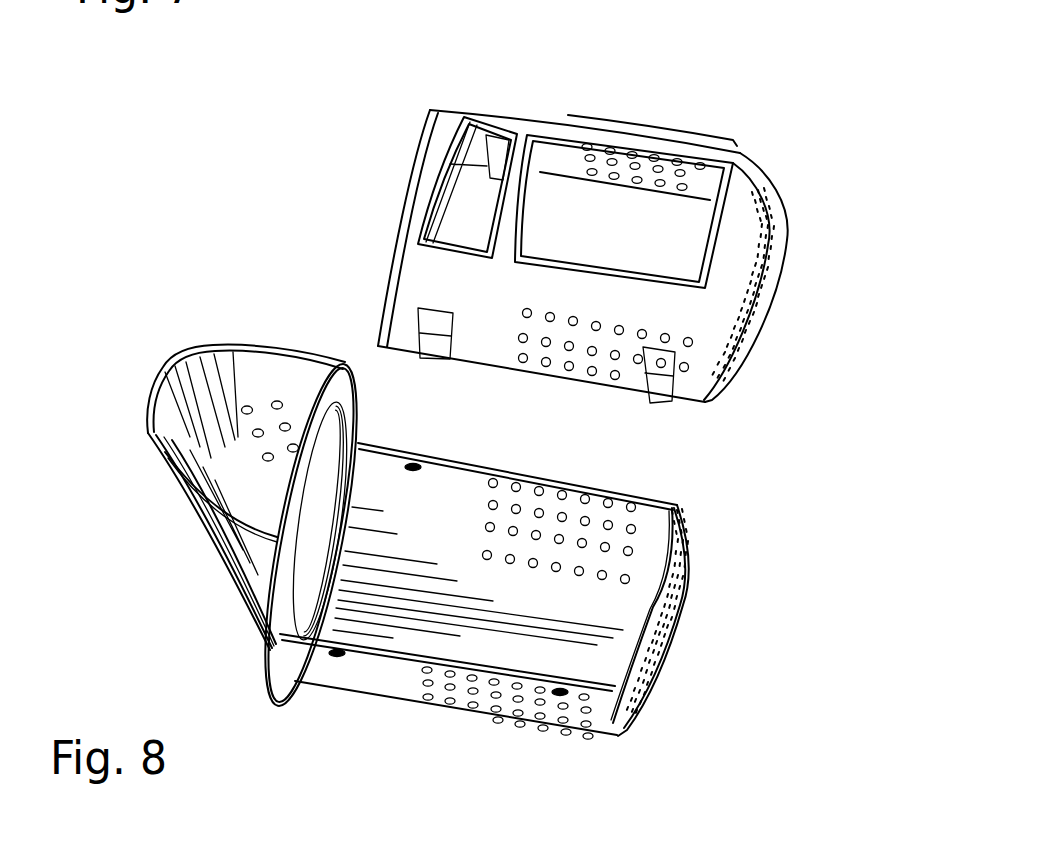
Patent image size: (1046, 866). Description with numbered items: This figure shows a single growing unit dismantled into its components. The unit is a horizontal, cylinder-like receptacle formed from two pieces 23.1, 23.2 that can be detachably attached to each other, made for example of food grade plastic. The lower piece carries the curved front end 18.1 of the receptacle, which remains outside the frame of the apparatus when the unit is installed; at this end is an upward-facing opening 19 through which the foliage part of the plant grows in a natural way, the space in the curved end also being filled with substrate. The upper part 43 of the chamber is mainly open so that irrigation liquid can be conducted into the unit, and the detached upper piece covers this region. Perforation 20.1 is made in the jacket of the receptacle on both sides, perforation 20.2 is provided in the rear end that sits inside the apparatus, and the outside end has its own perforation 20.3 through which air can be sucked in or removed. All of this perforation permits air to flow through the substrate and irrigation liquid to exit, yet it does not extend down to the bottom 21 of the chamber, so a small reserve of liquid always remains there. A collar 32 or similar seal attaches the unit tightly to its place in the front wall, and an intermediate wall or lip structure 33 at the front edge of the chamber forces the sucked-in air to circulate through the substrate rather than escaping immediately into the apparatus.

The end of the receptacle 18.1 is at (170, 529).
The opening 19 is at (194, 418).
The perforation 20.1 is at (700, 752).
The perforation 20.2 is at (678, 612).
The perforation 20.3 is at (258, 388).
The bottom 21 is at (572, 670).
The piece 23.1 is at (725, 693).
The piece 23.2 is at (764, 162).
The collar 32 is at (293, 695).
The intermediate wall structure 33 is at (452, 168).
The upper part 43 is at (664, 118).